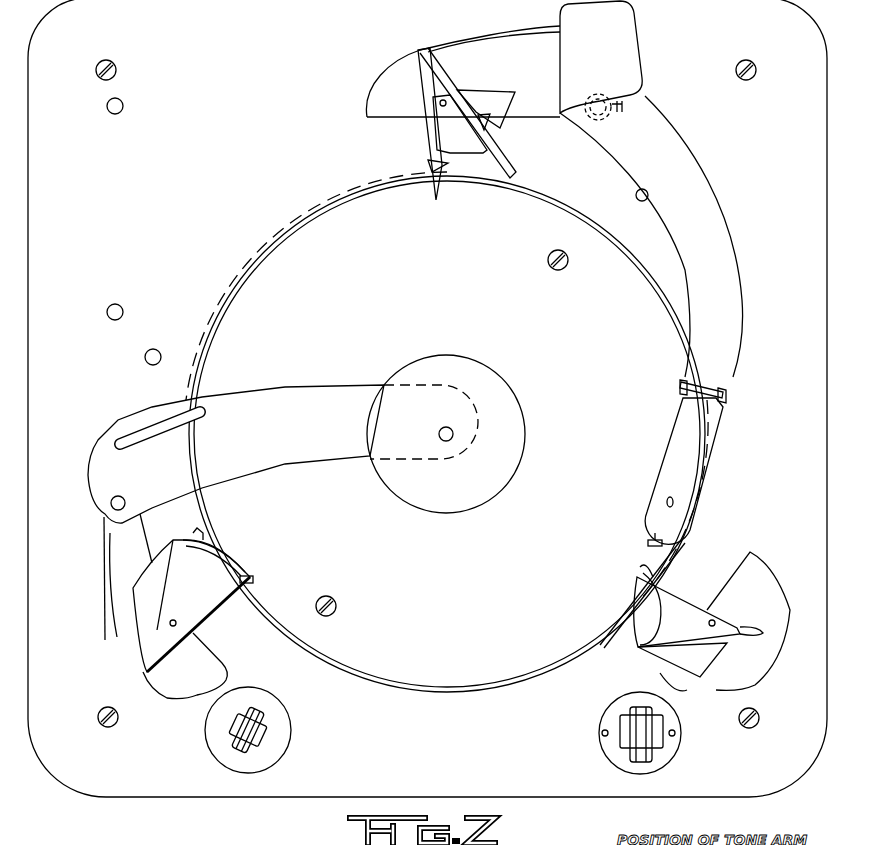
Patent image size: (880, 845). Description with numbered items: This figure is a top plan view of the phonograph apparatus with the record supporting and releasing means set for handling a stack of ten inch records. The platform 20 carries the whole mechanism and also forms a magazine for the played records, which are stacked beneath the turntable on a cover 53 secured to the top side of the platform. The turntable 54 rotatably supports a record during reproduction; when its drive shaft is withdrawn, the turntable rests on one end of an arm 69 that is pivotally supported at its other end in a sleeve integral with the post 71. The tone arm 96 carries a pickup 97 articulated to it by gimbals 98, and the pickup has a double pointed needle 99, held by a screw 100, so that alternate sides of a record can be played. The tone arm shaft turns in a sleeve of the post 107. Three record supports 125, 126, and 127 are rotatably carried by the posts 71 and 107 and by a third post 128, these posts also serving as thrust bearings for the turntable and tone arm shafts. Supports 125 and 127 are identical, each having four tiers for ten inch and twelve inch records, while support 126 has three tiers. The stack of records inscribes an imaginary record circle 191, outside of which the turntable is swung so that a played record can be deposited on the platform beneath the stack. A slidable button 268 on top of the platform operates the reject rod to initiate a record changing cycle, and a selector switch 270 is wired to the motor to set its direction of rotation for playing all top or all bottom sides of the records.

The platform 20 is at (183, 787).
The cover 53 is at (458, 677).
The turntable 54 is at (495, 387).
The arm 69 is at (285, 393).
The post 71 is at (184, 690).
The tone arm 96 is at (712, 216).
The pickup 97 is at (708, 448).
The gimbals 98 is at (722, 390).
The double pointed needle 99 is at (676, 503).
The screw 100 is at (672, 553).
The post 107 is at (508, 33).
The record support 125 is at (140, 632).
The record support 126 is at (415, 70).
The record support 127 is at (730, 655).
The post 128 is at (764, 605).
The imaginary record circle 191 is at (443, 386).
The slidable button 268 is at (654, 741).
The selector switch 270 is at (265, 737).